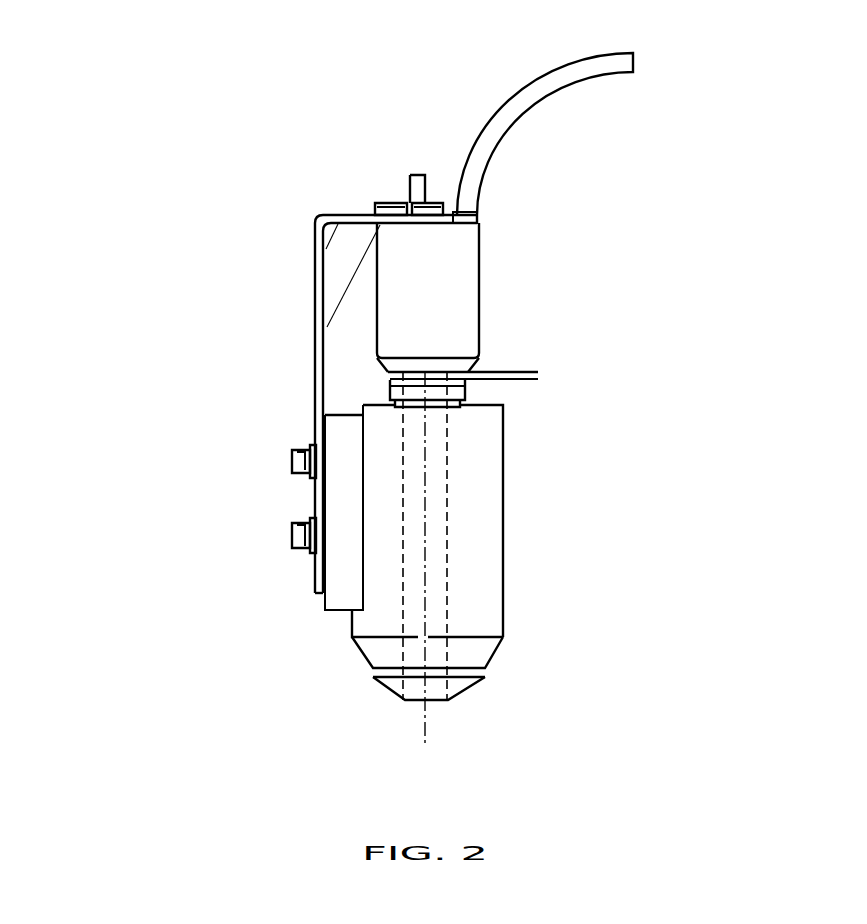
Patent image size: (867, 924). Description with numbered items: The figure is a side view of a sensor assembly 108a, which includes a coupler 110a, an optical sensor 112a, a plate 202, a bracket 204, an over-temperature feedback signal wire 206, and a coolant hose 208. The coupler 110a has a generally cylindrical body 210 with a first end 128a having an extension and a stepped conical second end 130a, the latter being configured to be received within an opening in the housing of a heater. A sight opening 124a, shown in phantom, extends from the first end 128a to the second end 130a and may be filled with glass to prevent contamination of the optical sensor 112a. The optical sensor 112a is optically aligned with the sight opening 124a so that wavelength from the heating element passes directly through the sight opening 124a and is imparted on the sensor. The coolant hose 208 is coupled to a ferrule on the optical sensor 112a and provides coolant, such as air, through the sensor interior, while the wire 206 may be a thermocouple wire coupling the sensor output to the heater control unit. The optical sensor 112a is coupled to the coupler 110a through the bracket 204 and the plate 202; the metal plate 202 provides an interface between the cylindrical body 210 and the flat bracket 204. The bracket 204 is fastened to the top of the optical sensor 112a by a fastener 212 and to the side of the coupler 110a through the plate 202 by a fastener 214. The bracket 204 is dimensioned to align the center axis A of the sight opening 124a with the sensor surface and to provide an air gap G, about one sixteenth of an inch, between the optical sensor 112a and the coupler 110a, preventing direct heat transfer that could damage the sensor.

The sensor assembly 108a is at (217, 135).
The coupler 110a is at (502, 485).
The optical sensor 112a is at (480, 263).
The sight opening 124a is at (448, 567).
The first end 128a is at (503, 405).
The stepped conical second end 130a is at (503, 670).
The plate 202 is at (340, 612).
The bracket 204 is at (313, 338).
The over-temperature feedback signal wire 206 is at (407, 177).
The coolant hose 208 is at (503, 97).
The generally cylindrical body 210 is at (503, 615).
The fastener 212 is at (377, 205).
The fastener 214 is at (292, 463).
The air gap G is at (538, 347).
The center axis A is at (425, 735).